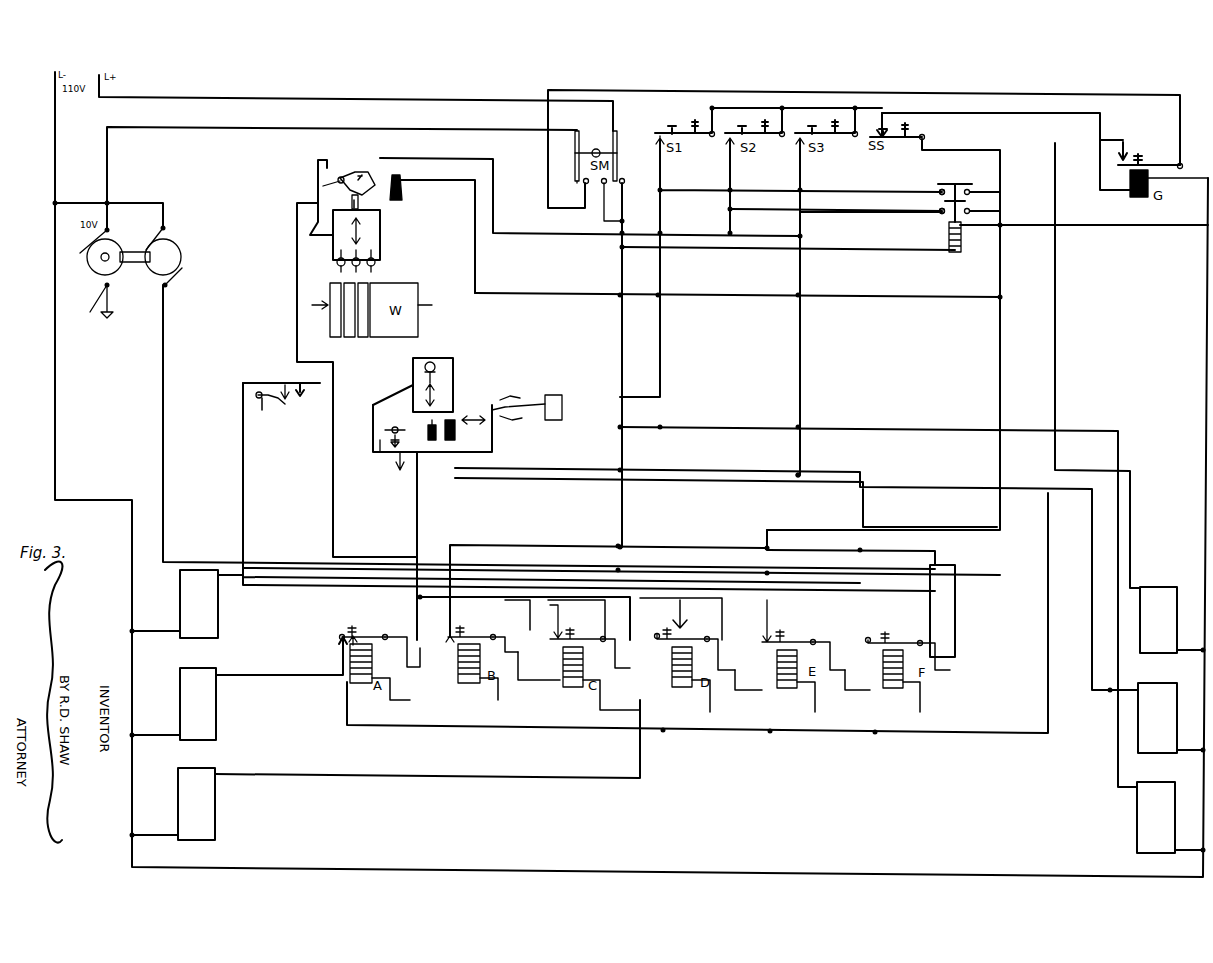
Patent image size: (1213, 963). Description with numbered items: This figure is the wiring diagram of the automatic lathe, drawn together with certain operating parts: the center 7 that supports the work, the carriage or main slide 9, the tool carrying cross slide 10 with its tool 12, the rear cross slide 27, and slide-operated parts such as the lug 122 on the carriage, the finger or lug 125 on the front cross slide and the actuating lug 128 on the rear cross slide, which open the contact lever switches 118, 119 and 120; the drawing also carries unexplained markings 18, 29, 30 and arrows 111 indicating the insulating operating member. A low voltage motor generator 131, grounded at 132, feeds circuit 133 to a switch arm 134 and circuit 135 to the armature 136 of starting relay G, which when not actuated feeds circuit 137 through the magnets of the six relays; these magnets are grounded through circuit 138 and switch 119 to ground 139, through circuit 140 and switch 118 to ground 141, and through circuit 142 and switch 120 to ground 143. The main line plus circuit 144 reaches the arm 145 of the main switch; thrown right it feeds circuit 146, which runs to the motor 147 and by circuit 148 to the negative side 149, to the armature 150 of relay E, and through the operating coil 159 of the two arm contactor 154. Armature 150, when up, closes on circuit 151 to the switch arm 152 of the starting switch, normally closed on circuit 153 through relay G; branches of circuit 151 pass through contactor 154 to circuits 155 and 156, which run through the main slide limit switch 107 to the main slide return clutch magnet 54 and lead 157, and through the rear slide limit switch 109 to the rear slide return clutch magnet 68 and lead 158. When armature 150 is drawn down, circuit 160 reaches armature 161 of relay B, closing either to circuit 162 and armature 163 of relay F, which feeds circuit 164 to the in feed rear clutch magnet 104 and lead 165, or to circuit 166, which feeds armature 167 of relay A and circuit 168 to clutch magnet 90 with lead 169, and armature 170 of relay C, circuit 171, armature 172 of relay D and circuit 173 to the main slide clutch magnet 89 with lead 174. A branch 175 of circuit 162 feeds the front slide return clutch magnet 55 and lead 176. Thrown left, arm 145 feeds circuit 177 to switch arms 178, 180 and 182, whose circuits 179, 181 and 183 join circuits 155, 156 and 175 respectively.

The center 7 is at (316, 305).
The carriage or main slide 9 is at (380, 455).
The tool carrying cross slide 10 is at (455, 365).
The tool 12 is at (440, 358).
The carriage contact 18 is at (429, 434).
The rear cross slide 27 is at (378, 242).
The plunger 29 is at (358, 203).
The contact screws 30 is at (336, 270).
The main slide return clutch magnet 54 is at (1137, 830).
The front slide return clutch magnet 55 is at (1138, 725).
The rear slide return clutch magnet 68 is at (1140, 632).
The main slide clutch magnet 89 is at (215, 808).
The clutch magnet for in feed of front cross slide 90 is at (216, 715).
The in feed rear clutch magnet 104 is at (218, 620).
The main slide limit switch 107 is at (572, 390).
The rear slide limit switch 109 is at (402, 193).
The operating member 111 is at (480, 418).
The contact lever switch 118 is at (266, 420).
The contact lever switch 119 is at (396, 427).
The contact lever switch 120 is at (322, 190).
The lug or projection 122 is at (378, 406).
The finger or lug 125 is at (378, 450).
The actuating lug 128 is at (322, 160).
The motor generator 131 is at (88, 274).
The ground 132 is at (110, 302).
The circuit 133 is at (160, 203).
The switch arm 134 is at (576, 184).
The circuit 135 is at (578, 196).
The armature of starting relay G 136 is at (1148, 162).
The circuit 137 is at (1045, 710).
The circuit 138 is at (625, 605).
The ground 139 is at (402, 472).
The circuit 140 is at (243, 510).
The ground 141 is at (292, 400).
The circuit 142 is at (955, 597).
The ground 143 is at (380, 178).
The main line plus circuit line 144 is at (617, 118).
The arm of main double arm switch SM 145 is at (613, 145).
The circuit 146 is at (832, 550).
The motor of the motor generator 147 is at (185, 250).
The circuit 148 is at (458, 432).
The negative side of main line circuit 149 is at (1203, 775).
The armature of relay E 150 is at (784, 625).
The circuit 151 is at (755, 600).
The switch arm of starting switch SS 152 is at (896, 140).
The circuit 153 is at (1100, 190).
The two arm contactor or automatic switch 154 is at (952, 186).
The circuit 155 is at (1118, 790).
The circuit 156 is at (1132, 578).
The circuit 157 is at (1190, 852).
The circuit 158 is at (1188, 650).
The operating coil 159 is at (960, 255).
The circuit 160 is at (740, 710).
The armature of relay B 161 is at (478, 630).
The circuit 162 is at (940, 625).
The armature of relay F 163 is at (893, 640).
The circuit 164 is at (855, 690).
The circuit 165 is at (142, 631).
The circuit 166 is at (418, 650).
The armature of relay A 167 is at (360, 630).
The circuit 168 is at (262, 675).
The circuit 169 is at (150, 742).
The armature of relay C 170 is at (578, 630).
The circuit 171 is at (705, 620).
The armature of relay D 172 is at (672, 636).
The circuit 173 is at (640, 760).
The circuit 174 is at (142, 835).
The circuit 175 is at (1110, 688).
The circuit 176 is at (1188, 750).
The circuit 177 is at (590, 208).
The switch arm of S1 178 is at (710, 138).
The circuit 179 is at (665, 180).
The contact lever of switch S2 180 is at (781, 138).
The circuit 181 is at (732, 183).
The contact arm of switch S3 182 is at (850, 138).
The circuit 183 is at (800, 360).